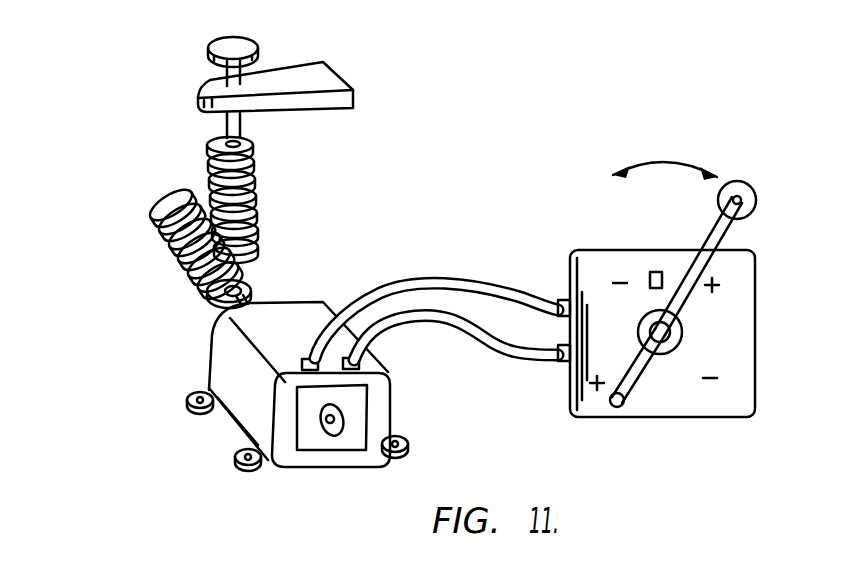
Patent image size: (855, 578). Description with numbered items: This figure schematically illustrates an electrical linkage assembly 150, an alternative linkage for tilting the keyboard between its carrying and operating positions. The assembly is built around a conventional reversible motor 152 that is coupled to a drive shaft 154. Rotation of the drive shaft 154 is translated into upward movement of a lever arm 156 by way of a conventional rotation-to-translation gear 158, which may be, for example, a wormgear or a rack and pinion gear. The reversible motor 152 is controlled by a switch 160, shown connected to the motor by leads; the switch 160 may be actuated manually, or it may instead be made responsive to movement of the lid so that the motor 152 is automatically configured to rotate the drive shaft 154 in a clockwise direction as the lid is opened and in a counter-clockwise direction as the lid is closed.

The electrical linkage assembly 150 is at (110, 75).
The reversible motor 152 is at (322, 302).
The drive shaft 154 is at (208, 311).
The lever arm 156 is at (322, 79).
The rotation-to-translation gear 158 is at (262, 236).
The switch 160 is at (746, 251).